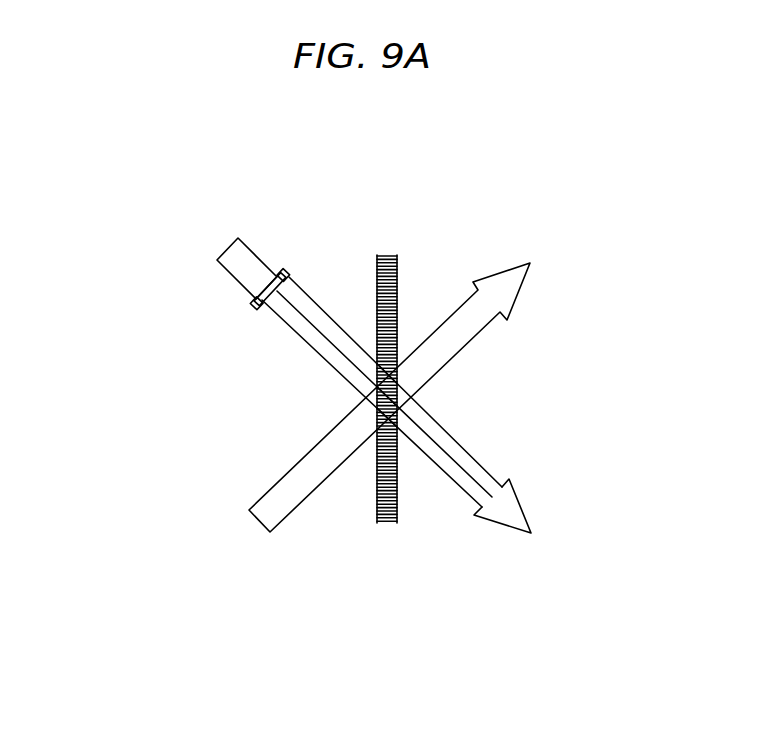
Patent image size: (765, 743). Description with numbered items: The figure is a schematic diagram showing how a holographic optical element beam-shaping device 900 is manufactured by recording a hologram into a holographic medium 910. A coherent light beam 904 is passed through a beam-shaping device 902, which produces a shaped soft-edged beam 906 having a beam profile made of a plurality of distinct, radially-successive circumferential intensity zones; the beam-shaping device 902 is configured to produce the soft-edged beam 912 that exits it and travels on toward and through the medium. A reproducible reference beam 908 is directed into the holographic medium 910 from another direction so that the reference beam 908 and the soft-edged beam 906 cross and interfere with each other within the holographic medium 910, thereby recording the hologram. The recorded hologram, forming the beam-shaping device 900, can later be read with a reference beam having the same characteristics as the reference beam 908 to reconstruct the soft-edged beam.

The beam-shaping device 900 is at (590, 100).
The beam-shaping device 902 is at (284, 273).
The coherent light beam 904 is at (236, 240).
The soft-edged beam 906 is at (303, 343).
The reference beam 908 is at (285, 517).
The holographic medium 910 is at (397, 290).
The soft-edged beam 912 is at (463, 494).